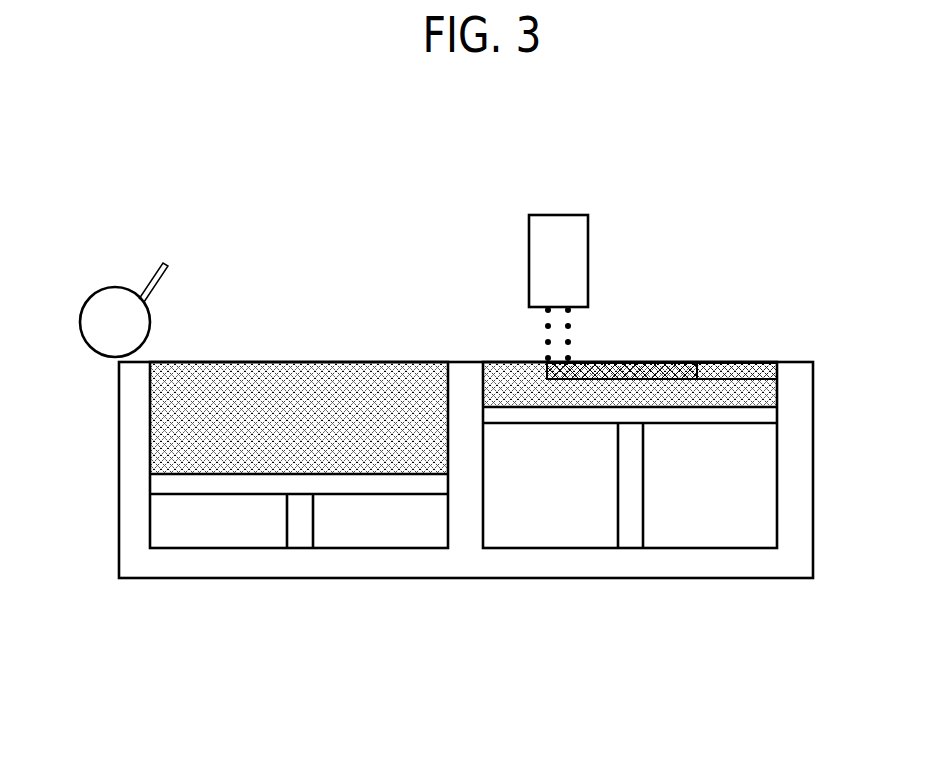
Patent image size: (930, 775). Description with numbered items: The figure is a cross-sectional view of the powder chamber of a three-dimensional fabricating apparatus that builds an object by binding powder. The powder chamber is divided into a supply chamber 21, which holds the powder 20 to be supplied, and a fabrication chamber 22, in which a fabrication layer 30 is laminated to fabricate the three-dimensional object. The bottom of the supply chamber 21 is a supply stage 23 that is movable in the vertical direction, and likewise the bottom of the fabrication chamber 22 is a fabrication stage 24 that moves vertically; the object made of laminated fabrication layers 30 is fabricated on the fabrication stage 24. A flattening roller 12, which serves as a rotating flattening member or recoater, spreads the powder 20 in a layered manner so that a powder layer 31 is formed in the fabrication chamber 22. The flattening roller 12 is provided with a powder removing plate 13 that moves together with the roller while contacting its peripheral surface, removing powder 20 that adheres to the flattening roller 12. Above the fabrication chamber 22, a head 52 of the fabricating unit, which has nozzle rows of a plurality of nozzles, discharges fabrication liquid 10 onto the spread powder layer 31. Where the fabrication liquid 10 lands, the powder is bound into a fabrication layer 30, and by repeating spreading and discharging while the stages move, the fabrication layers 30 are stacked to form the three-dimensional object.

The fabrication liquid 10 is at (545, 326).
The flattening roller 12 is at (102, 323).
The powder removing plate 13 is at (164, 268).
The powder 20 is at (311, 385).
The supply chamber 21 is at (126, 471).
The fabrication chamber 22 is at (802, 475).
The supply stage 23 is at (362, 492).
The fabrication stage 24 is at (590, 415).
The fabrication layer 30 is at (673, 372).
The powder layer 31 is at (718, 372).
The head 52 is at (560, 228).